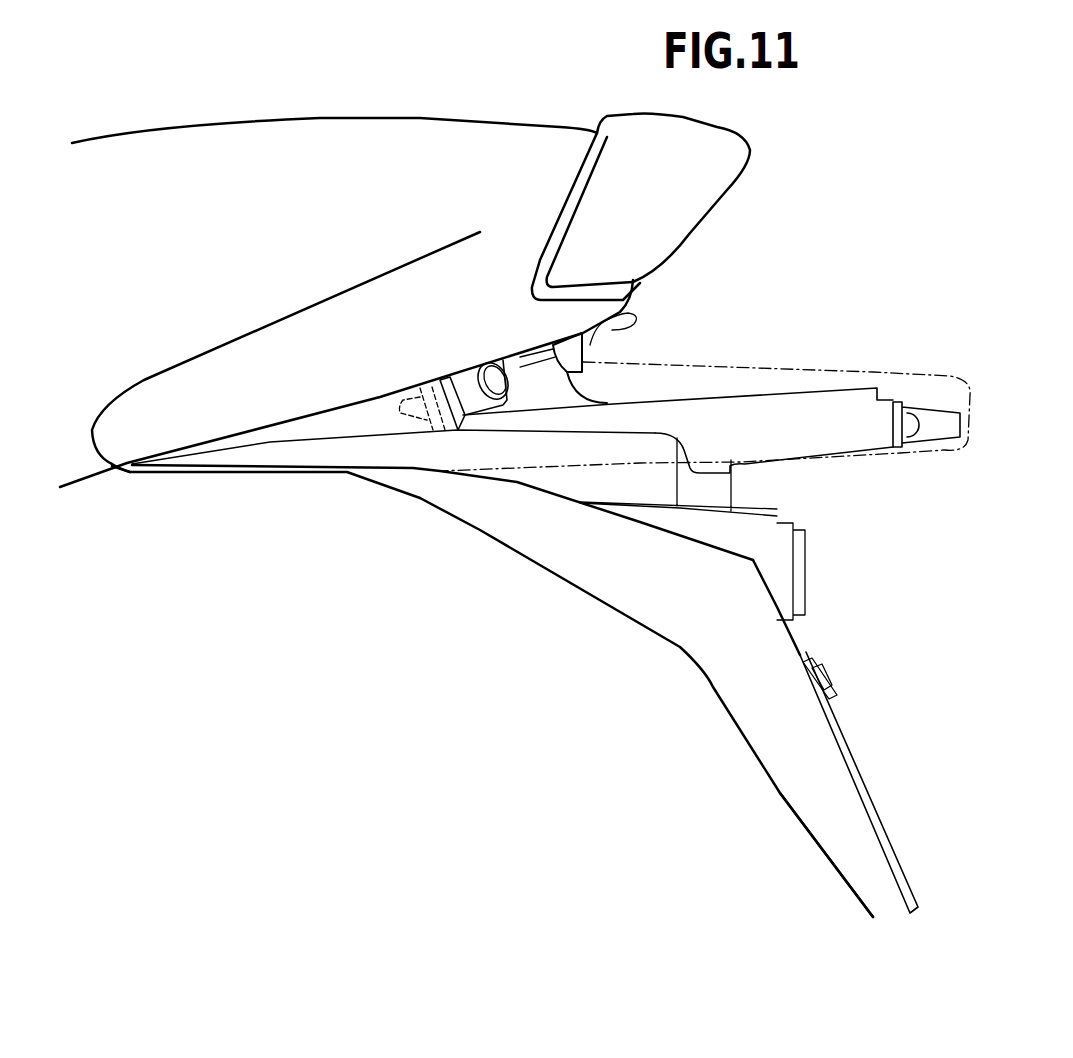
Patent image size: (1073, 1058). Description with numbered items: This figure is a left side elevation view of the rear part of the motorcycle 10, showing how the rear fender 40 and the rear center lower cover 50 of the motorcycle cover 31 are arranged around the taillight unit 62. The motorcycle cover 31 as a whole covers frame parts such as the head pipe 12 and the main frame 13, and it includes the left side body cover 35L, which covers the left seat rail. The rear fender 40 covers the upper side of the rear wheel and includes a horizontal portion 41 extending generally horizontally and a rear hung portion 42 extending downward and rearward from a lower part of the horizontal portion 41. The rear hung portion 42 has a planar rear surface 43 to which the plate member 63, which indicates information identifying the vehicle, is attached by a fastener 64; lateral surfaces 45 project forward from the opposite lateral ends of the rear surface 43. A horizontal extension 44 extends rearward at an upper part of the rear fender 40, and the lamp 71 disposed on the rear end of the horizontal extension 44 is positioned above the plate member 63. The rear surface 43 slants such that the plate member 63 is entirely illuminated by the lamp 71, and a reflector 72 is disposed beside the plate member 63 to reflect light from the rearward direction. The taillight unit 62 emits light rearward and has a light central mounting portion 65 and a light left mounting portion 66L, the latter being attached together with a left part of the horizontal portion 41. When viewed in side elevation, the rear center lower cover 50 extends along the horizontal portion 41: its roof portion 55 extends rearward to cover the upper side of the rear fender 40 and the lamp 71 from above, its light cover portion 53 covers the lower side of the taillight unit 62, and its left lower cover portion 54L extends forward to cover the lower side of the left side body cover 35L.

The motorcycle 10 is at (957, 160).
The head pipe 12 is at (520, 277).
The main frame 13 is at (217, 324).
The motorcycle cover 31 is at (331, 106).
The left side body cover 35L is at (413, 187).
The rear fender 40 is at (465, 539).
The horizontal portion 41 is at (122, 479).
The rear hung portion 42 is at (811, 863).
The rear surface 43 is at (793, 637).
The horizontal extension 44 is at (790, 392).
The lateral surfaces 45 is at (753, 712).
The rear center lower cover 50 is at (940, 370).
The light cover portion 53 is at (642, 320).
The left lower cover portion 54L is at (492, 468).
The roof portion 55 is at (873, 373).
The taillight unit 62 is at (743, 167).
The plate member 63 is at (870, 792).
The fastener 64 is at (838, 682).
The light central mounting portion 65 is at (600, 343).
The light left mounting portion 66L is at (482, 413).
The lamp 71 is at (940, 448).
The reflector 72 is at (807, 568).